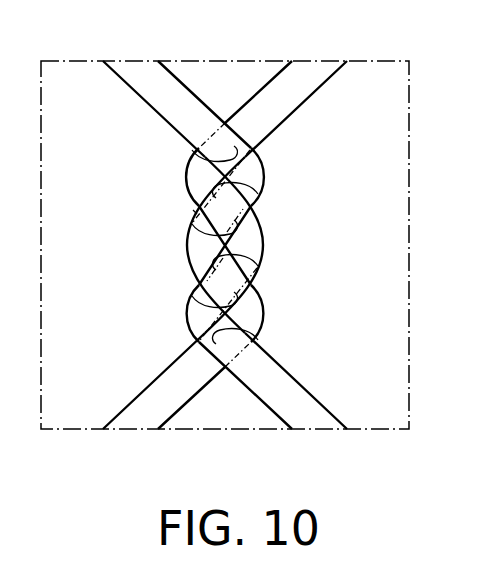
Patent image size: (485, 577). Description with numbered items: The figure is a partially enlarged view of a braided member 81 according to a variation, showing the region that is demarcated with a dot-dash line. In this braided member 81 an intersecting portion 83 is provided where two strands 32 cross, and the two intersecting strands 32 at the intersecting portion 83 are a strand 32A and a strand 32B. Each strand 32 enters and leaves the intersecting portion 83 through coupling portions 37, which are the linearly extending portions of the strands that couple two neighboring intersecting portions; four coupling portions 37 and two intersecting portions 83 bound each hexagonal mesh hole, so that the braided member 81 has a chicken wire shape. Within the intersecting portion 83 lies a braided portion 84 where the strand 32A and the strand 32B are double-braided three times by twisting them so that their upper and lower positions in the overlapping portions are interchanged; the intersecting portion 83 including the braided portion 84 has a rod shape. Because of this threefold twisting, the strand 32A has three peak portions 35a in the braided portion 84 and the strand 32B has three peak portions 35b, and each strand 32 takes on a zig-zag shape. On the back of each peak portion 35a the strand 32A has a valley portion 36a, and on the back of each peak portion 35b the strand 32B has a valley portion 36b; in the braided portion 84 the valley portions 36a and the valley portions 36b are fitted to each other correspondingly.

The strand 32 is at (235, 226).
The strand 32A is at (166, 70).
The strand 32B is at (282, 70).
The braided member 81 is at (400, 92).
The coupling portion 37 is at (146, 100).
The intersecting portion 83 is at (261, 150).
The braided portion 84 is at (195, 213).
The peak portion 35a is at (261, 176).
The peak portion 35b is at (189, 176).
The valley portion 36a is at (252, 189).
The valley portion 36b is at (193, 150).